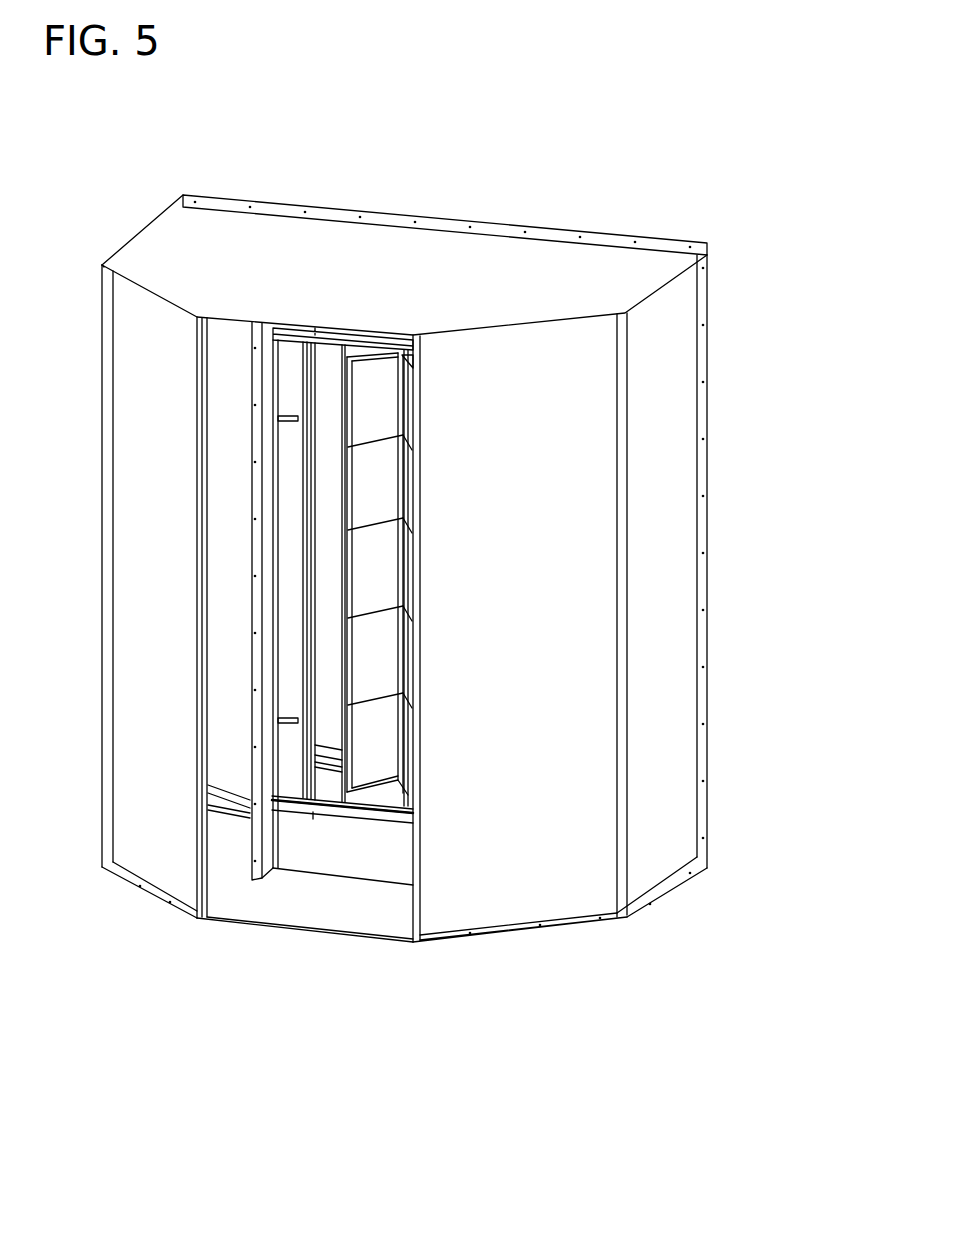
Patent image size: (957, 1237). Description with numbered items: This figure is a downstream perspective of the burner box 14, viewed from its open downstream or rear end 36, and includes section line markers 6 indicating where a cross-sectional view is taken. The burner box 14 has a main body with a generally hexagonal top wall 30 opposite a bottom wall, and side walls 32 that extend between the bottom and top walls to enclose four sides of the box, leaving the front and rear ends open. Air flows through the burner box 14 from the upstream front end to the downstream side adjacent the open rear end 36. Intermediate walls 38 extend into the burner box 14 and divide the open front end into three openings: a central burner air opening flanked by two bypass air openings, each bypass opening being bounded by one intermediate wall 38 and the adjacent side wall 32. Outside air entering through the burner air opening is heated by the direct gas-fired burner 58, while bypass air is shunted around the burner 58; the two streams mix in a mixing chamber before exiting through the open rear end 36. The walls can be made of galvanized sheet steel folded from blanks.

The burner box 14 is at (748, 231).
The top wall 30 is at (560, 301).
The side walls 32 is at (172, 471).
The open downstream or rear end 36 is at (300, 937).
The intermediate walls 38 is at (250, 367).
The direct gas-fired burner 58 is at (370, 660).
The section line 6- 6 is at (87, 427).